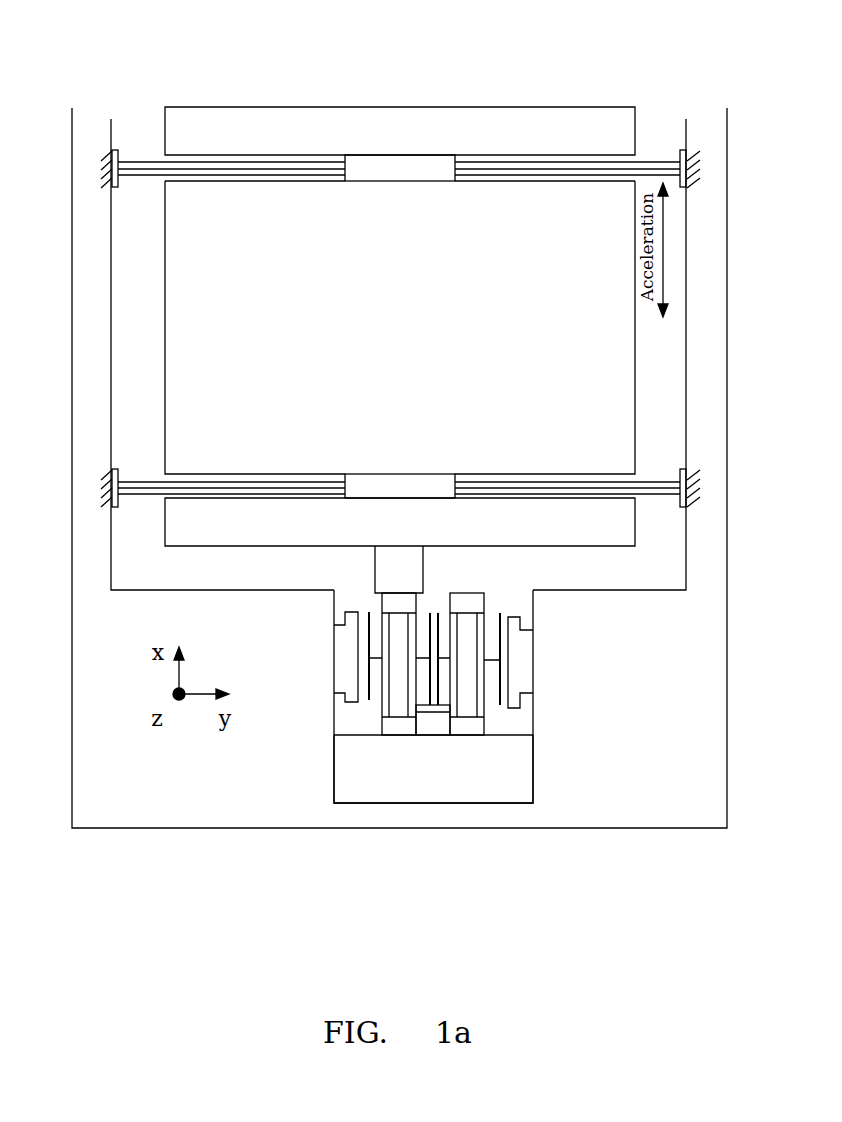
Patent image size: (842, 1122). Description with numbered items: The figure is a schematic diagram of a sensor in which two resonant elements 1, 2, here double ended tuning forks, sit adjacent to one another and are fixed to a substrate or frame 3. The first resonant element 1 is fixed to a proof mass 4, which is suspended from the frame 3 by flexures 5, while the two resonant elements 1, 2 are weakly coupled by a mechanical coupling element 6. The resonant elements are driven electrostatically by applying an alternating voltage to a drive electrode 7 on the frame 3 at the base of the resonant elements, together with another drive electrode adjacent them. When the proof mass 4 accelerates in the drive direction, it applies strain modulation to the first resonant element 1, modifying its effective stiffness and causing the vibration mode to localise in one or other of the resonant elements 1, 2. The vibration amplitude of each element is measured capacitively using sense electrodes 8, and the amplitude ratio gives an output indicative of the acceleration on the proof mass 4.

The first resonant element 1 is at (388, 667).
The second resonant element 2 is at (480, 673).
The frame 3 is at (89, 350).
The proof mass 4 is at (418, 222).
The flexures 5 is at (145, 162).
The mechanical coupling element 6 is at (432, 712).
The drive electrode 7 is at (520, 763).
The sense electrodes 8 is at (355, 650).